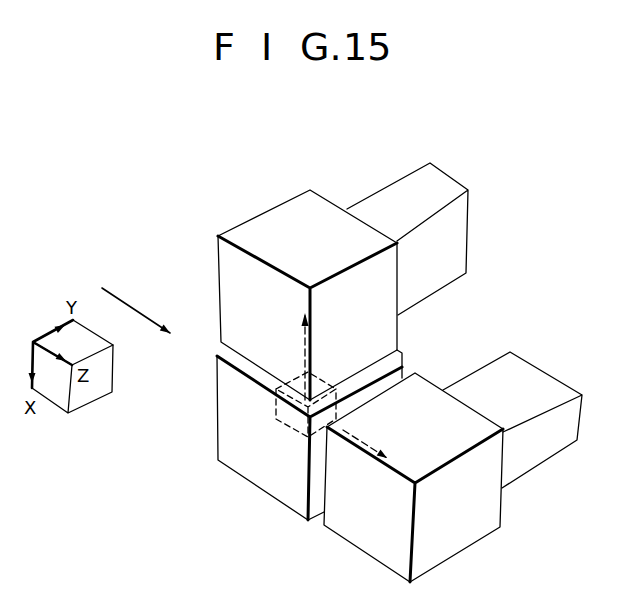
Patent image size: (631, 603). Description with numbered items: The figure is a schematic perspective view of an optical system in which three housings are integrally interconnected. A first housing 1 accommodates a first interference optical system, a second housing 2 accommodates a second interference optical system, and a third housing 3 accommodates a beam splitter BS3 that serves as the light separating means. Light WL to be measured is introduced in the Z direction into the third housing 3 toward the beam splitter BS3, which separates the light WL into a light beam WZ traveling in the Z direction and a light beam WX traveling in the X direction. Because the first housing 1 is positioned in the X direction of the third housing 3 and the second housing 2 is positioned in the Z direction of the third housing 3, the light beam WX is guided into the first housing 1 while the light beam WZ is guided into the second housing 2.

The first housing 1 is at (375, 207).
The second housing 2 is at (488, 500).
The third housing 3 is at (272, 480).
The beam splitter BS3 is at (278, 416).
The light beam WX is at (305, 339).
The light beam WZ is at (360, 442).
The light to be measured WL is at (135, 310).